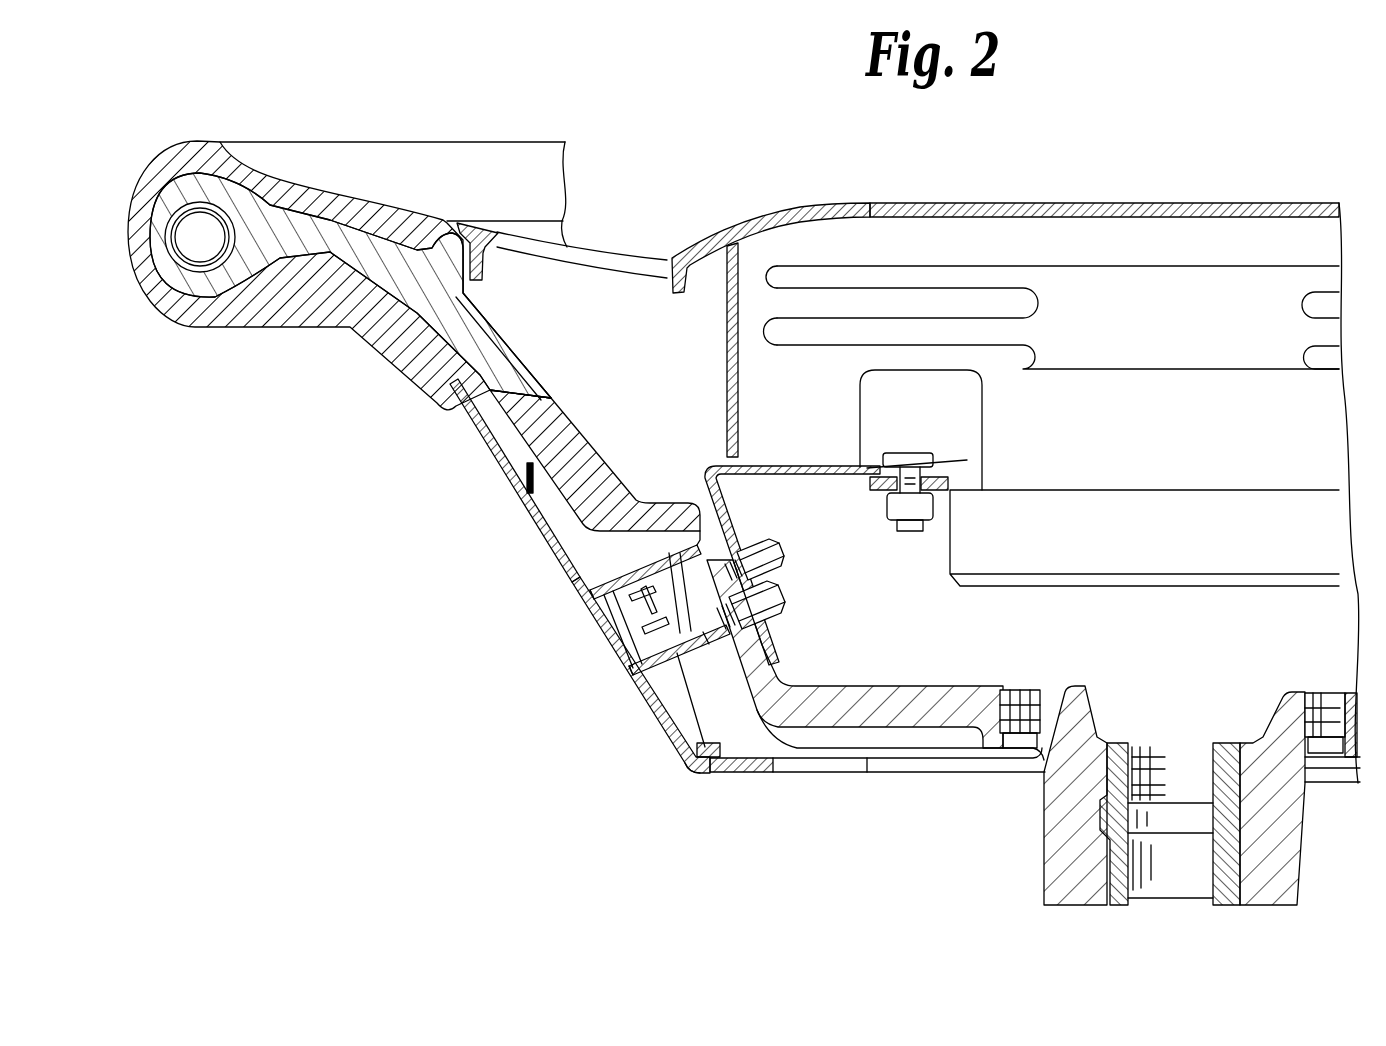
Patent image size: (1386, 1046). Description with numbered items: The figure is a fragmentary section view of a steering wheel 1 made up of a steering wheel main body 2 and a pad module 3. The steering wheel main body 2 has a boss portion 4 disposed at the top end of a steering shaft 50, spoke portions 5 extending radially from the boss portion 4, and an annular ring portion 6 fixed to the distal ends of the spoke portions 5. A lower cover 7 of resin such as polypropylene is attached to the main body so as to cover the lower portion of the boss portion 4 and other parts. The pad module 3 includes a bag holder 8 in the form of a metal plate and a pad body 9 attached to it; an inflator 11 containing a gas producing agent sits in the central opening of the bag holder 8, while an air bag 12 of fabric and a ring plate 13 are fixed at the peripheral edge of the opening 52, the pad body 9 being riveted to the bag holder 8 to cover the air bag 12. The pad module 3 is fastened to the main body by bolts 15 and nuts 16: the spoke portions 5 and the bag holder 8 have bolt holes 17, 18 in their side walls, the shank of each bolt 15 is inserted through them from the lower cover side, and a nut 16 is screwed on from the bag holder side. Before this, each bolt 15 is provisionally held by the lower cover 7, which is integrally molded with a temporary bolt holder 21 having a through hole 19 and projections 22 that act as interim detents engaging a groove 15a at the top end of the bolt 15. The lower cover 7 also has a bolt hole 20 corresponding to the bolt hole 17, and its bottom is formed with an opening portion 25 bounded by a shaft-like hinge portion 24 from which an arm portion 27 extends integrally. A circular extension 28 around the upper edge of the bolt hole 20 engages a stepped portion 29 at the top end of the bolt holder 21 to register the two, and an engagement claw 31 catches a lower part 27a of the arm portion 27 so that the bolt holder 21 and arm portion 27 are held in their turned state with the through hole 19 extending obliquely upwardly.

The steering wheel 1 is at (588, 130).
The steering wheel main body 2 is at (553, 342).
The pad module 3 is at (755, 195).
The boss portion 4 is at (1072, 689).
The spoke portion 5 is at (584, 432).
The annular ring portion 6 is at (422, 142).
The lower cover 7 is at (488, 466).
The bag holder 8 is at (775, 540).
The pad body 9 is at (1090, 200).
The inflator 11 is at (948, 568).
The air bag 12 is at (797, 335).
The ring plate 13 is at (958, 462).
The bolt 15 is at (633, 641).
The groove 15a is at (705, 637).
The nut 16 is at (793, 598).
The bolt hole 17 is at (712, 553).
The bolt hole 18 is at (777, 557).
The through hole 19 is at (604, 598).
The bolt hole 20 is at (627, 665).
The temporary bolt holder 21 is at (668, 533).
The projection 22 is at (633, 622).
The hinge portion 24 is at (778, 782).
The opening portion 25 is at (862, 775).
The arm portion 27 is at (670, 710).
The lower part of the arm portion 27a is at (742, 780).
The circular extension 28 is at (612, 578).
The stepped portion 29 is at (588, 590).
The engagement claw 31 is at (712, 746).
The steering shaft 50 is at (1052, 838).
The opening 52 is at (968, 470).